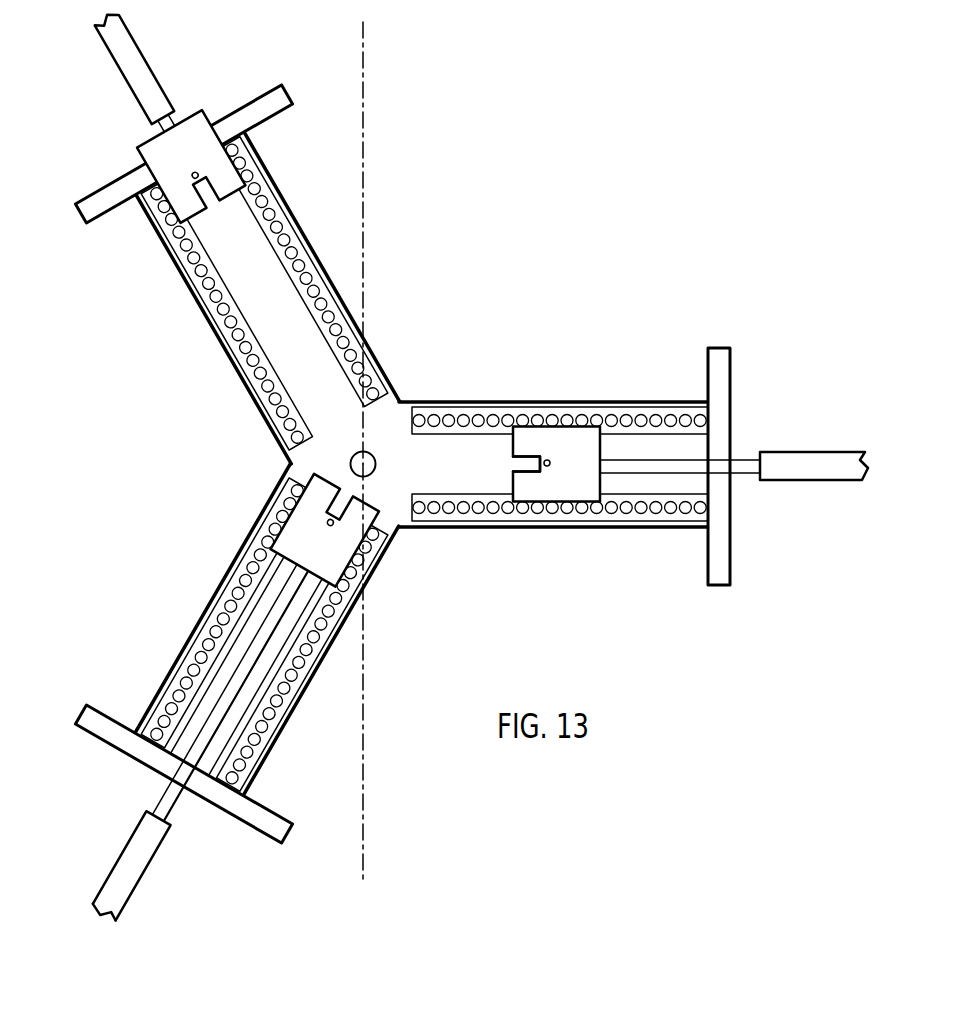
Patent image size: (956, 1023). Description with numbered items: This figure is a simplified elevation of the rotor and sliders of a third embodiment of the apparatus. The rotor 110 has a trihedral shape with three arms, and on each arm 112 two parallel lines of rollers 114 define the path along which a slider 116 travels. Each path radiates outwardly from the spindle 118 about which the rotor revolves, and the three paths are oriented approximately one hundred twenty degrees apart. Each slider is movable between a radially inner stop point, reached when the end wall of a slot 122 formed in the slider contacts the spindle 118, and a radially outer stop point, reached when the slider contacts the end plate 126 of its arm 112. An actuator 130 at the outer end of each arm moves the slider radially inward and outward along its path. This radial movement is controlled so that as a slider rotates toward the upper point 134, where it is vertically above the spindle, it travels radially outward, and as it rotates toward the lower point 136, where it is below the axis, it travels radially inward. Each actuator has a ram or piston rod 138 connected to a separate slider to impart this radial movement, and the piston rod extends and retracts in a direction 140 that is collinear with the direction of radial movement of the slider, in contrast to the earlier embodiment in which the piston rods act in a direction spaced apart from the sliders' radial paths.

The rotor 110 is at (432, 256).
The arm 112 is at (617, 401).
The rollers 114 is at (488, 503).
The slider 116 is at (603, 484).
The spindle 118 is at (350, 463).
The slot 122 is at (538, 474).
The end plate 126 is at (705, 350).
The actuator 130 is at (126, 850).
The upper point 134 is at (363, 96).
The lower point 136 is at (365, 818).
The piston rod 138 is at (250, 641).
The direction of piston rod movement 140 is at (100, 924).